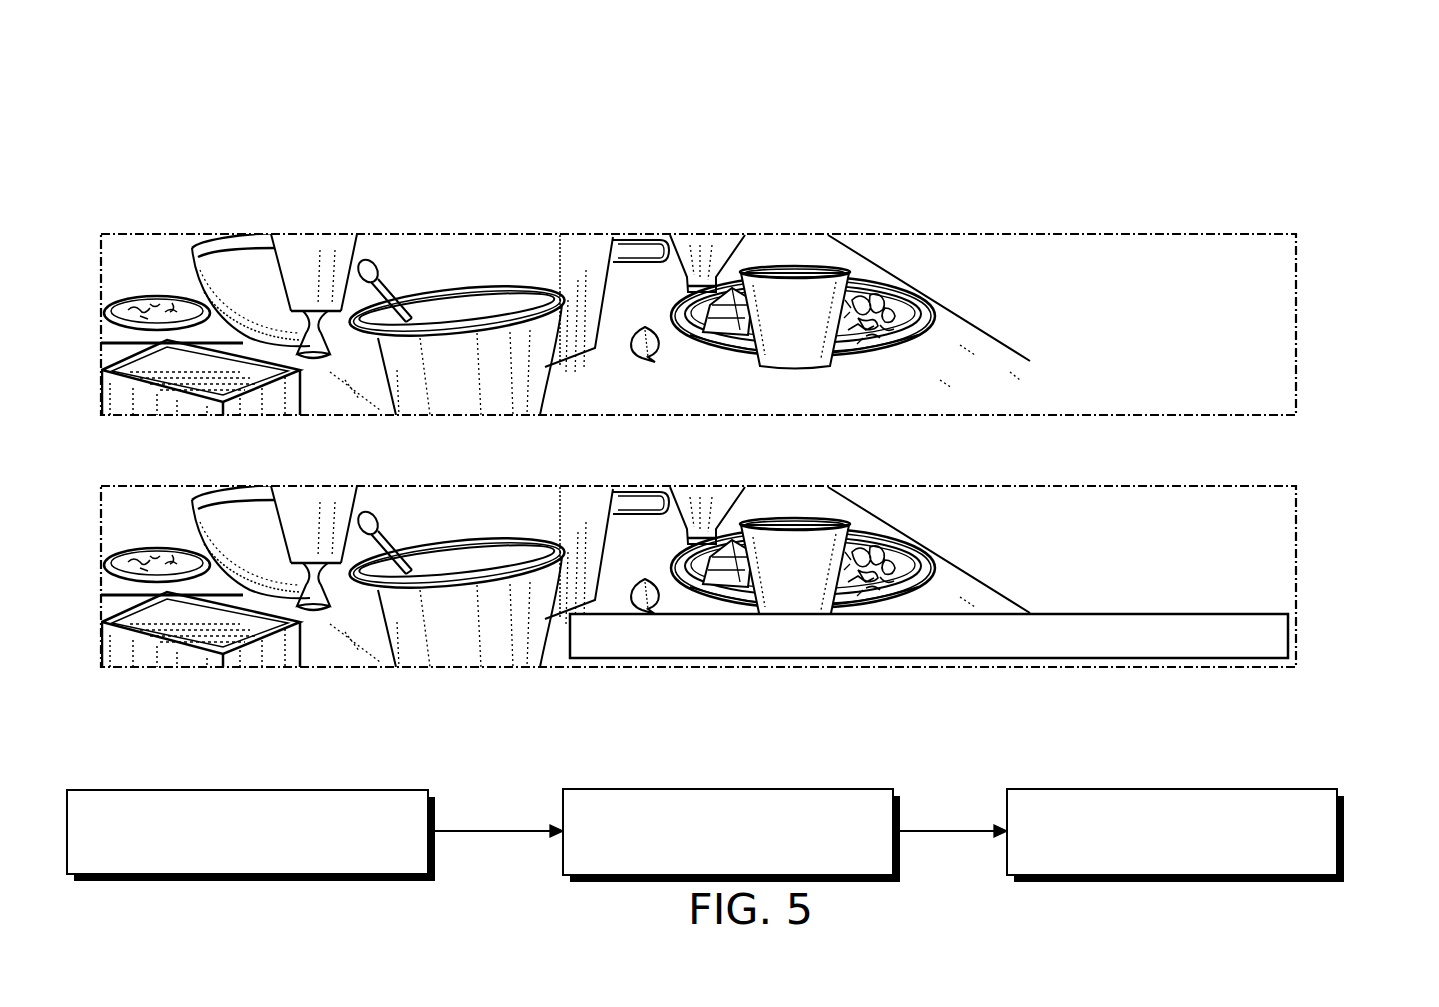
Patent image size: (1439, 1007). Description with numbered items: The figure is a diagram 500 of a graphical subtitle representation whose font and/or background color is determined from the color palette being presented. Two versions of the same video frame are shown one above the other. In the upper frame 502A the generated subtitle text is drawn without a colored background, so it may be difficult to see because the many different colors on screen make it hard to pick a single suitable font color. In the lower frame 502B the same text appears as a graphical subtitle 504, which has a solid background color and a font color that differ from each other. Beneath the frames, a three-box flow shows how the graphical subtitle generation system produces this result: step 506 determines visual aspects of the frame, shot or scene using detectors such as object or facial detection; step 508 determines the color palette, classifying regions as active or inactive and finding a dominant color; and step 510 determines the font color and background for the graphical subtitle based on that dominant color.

The diagram 500 is at (1302, 86).
The frame 502A is at (1246, 234).
The frame 502B is at (739, 565).
The graphical subtitle 504 is at (1290, 641).
The step to determine visual aspects of a frame, shot, scene, etc. 506 is at (398, 856).
The step to determine a color palette of the frame, shot, scene, etc. 508 is at (880, 856).
The step to determine a font color and background for the graphical subtitle 510 is at (1233, 870).